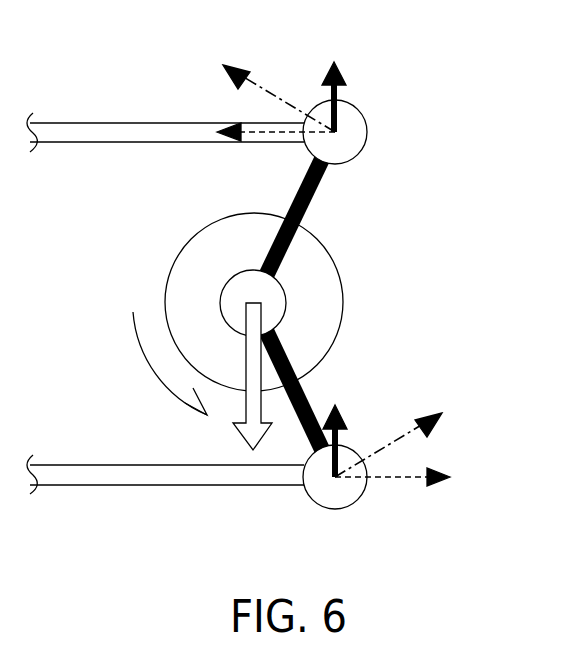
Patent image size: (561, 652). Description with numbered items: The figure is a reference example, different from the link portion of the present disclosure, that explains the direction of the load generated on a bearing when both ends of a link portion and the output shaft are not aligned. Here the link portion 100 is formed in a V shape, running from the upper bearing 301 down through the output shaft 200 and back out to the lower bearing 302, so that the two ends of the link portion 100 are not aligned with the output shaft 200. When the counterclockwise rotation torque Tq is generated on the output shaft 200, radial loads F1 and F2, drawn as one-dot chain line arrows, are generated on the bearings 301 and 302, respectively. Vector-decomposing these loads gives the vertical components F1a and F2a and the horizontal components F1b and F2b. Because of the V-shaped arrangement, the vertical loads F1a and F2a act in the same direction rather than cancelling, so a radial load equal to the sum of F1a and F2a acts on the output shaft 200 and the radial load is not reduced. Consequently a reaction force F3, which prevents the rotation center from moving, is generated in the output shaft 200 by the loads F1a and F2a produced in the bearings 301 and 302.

The link portion 100 is at (330, 210).
The output shaft 200 is at (340, 280).
The bearing 301 is at (367, 130).
The bearing 302 is at (309, 505).
The radial load F1 is at (280, 98).
The load in the vertical direction F1a is at (323, 100).
The load in the horizontal direction F1b is at (270, 140).
The radial load F2 is at (388, 442).
The load in the vertical direction F2a is at (345, 447).
The load in the horizontal direction F2b is at (390, 480).
The reaction force F3 is at (250, 402).
The rotation torque Tq is at (161, 363).